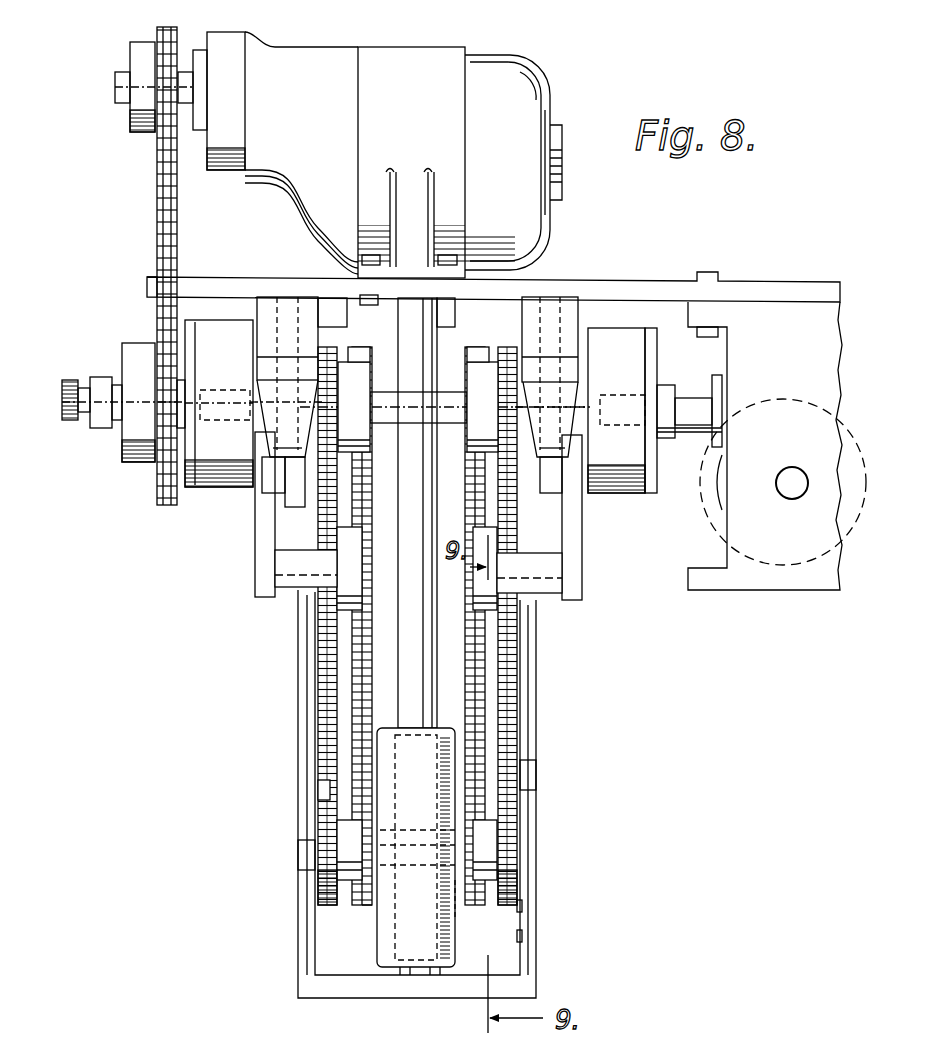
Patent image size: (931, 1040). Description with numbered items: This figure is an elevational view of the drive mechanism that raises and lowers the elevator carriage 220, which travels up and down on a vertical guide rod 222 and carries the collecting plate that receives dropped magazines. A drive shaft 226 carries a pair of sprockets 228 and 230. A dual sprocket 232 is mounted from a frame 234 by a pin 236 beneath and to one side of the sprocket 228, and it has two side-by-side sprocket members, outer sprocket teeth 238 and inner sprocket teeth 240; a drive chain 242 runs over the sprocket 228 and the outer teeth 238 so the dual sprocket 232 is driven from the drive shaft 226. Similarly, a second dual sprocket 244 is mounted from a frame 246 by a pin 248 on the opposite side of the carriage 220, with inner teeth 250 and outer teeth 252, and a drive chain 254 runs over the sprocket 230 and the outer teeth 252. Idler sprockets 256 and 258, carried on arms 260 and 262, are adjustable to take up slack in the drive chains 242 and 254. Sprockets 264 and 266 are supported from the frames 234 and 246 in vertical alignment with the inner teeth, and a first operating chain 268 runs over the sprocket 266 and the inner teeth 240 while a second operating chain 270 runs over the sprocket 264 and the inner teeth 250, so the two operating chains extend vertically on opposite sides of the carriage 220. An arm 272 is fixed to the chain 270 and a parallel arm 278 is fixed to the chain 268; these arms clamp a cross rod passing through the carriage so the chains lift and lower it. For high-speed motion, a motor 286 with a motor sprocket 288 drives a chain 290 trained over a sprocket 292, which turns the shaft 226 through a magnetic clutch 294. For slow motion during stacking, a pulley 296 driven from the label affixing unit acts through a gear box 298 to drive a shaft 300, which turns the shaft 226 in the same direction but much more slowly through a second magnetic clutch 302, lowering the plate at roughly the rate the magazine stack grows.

The elevator carriage 220 is at (377, 938).
The vertical guide rod 222 is at (425, 684).
The drive shaft 226 is at (440, 423).
The sprocket 228 is at (337, 380).
The sprocket 230 is at (508, 390).
The dual sprocket 232 is at (321, 885).
The frame 234 is at (298, 742).
The pin 236 is at (298, 852).
The outer sprocket teeth 238 is at (327, 797).
The inner sprocket teeth 240 is at (360, 830).
The drive chain 242 is at (323, 690).
The second dual sprocket 244 is at (503, 886).
The frame 246 is at (537, 778).
The pin 248 is at (537, 845).
The inner sprocket teeth 250 is at (520, 945).
The outer sprocket teeth 252 is at (520, 920).
The drive chain 254 is at (520, 730).
The idler sprocket 256 is at (330, 600).
The idler sprocket 258 is at (520, 620).
The arm 260 is at (260, 540).
The arm 262 is at (583, 567).
The sprocket 264 is at (452, 355).
The sprocket 266 is at (400, 340).
The first operating chain 268 is at (362, 647).
The second operating chain 270 is at (520, 652).
The arm 272 is at (455, 912).
The arm 278 is at (375, 905).
The motor 286 is at (340, 116).
The motor sprocket 288 is at (182, 33).
The chain 290 is at (156, 201).
The sprocket 292 is at (154, 492).
The magnetic clutch 294 is at (220, 480).
The pulley 296 is at (783, 565).
The gear box 298 is at (810, 359).
The shaft 300 is at (688, 402).
The second magnetic clutch 302 is at (617, 488).